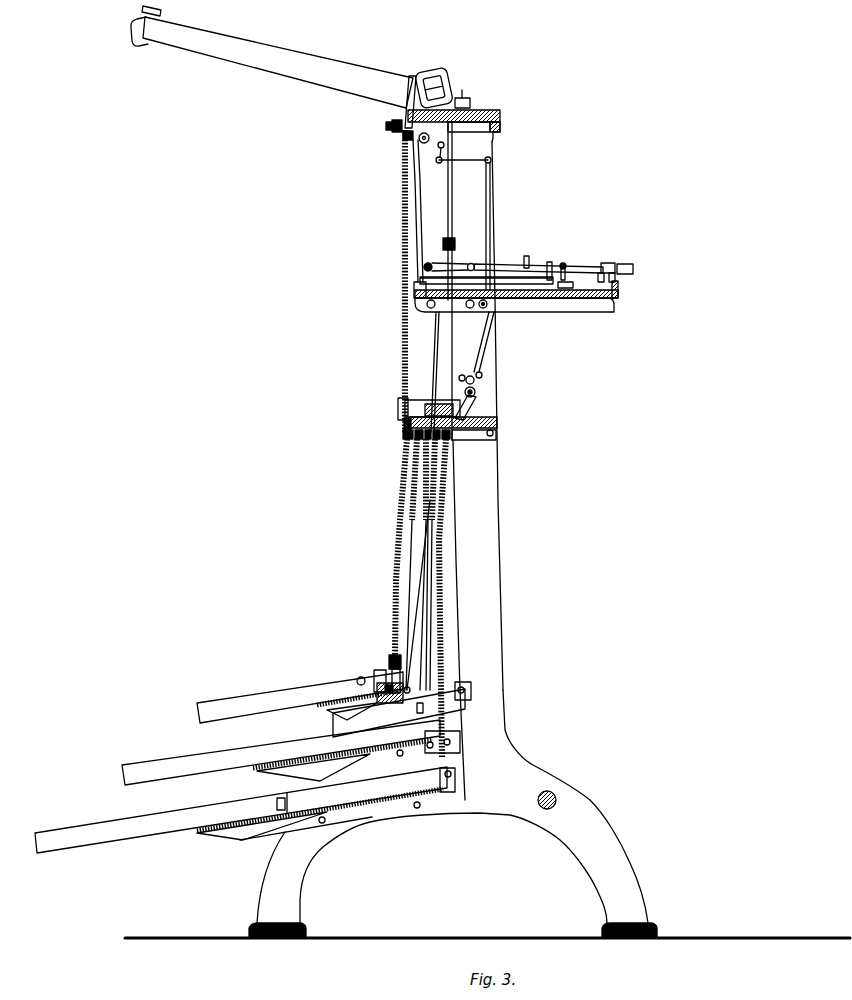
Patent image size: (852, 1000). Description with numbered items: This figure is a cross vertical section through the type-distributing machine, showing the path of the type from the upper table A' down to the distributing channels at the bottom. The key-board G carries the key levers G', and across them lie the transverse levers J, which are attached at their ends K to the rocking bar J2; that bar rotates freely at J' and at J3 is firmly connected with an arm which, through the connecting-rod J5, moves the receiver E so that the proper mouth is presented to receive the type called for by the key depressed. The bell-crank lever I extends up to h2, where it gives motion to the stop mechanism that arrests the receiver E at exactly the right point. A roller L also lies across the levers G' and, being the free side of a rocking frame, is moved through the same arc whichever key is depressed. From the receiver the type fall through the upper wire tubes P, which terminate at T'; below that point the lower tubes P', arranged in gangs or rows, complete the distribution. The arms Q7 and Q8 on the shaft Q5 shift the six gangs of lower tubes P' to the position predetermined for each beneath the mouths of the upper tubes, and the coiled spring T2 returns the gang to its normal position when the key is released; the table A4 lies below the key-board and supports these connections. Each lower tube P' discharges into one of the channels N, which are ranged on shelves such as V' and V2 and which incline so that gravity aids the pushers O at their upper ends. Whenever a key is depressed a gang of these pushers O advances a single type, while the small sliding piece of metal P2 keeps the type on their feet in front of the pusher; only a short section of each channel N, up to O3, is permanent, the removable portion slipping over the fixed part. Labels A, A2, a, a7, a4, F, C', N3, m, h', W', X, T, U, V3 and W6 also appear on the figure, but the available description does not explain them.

The frame A is at (487, 530).
The arm A2 is at (278, 62).
The hook a is at (133, 30).
The stop a7 is at (162, 12).
The plate a4 is at (420, 78).
The frame F is at (450, 95).
The bar C' is at (476, 97).
The table A' is at (470, 116).
The receiver E is at (390, 121).
The connecting-rod J5 is at (404, 141).
The bell-crank lever connection point h2 is at (492, 160).
The bell-crank lever I is at (491, 203).
The column interior N3 is at (467, 187).
The tubes P is at (392, 281).
The transverse lever J is at (468, 211).
The block m is at (455, 240).
The channels N is at (424, 267).
The roller L is at (453, 256).
The pin h' is at (513, 253).
The key-board levers G' is at (502, 293).
The key-board G is at (526, 296).
The bar connection point J3 is at (410, 288).
The rocking bar J2 is at (462, 312).
The lever ends K is at (525, 302).
The bar bearing J' is at (537, 321).
The rod W' is at (447, 372).
The link X is at (484, 354).
The shaft Q5 is at (478, 392).
The arm Q7 is at (472, 408).
The tube termination point T' is at (415, 416).
The table A4 is at (498, 422).
The clamps T is at (409, 443).
The coiled spring T2 is at (497, 440).
The arm Q8 is at (478, 442).
The bands U is at (404, 500).
The lower tubes P' is at (427, 598).
The rod V3 is at (420, 608).
The rod W6 is at (458, 649).
The fixed channel section end O3 is at (362, 678).
The small piece of metal P2 is at (374, 676).
The shelf V' is at (317, 742).
The shelf V2 is at (303, 826).
The pushers O is at (450, 732).